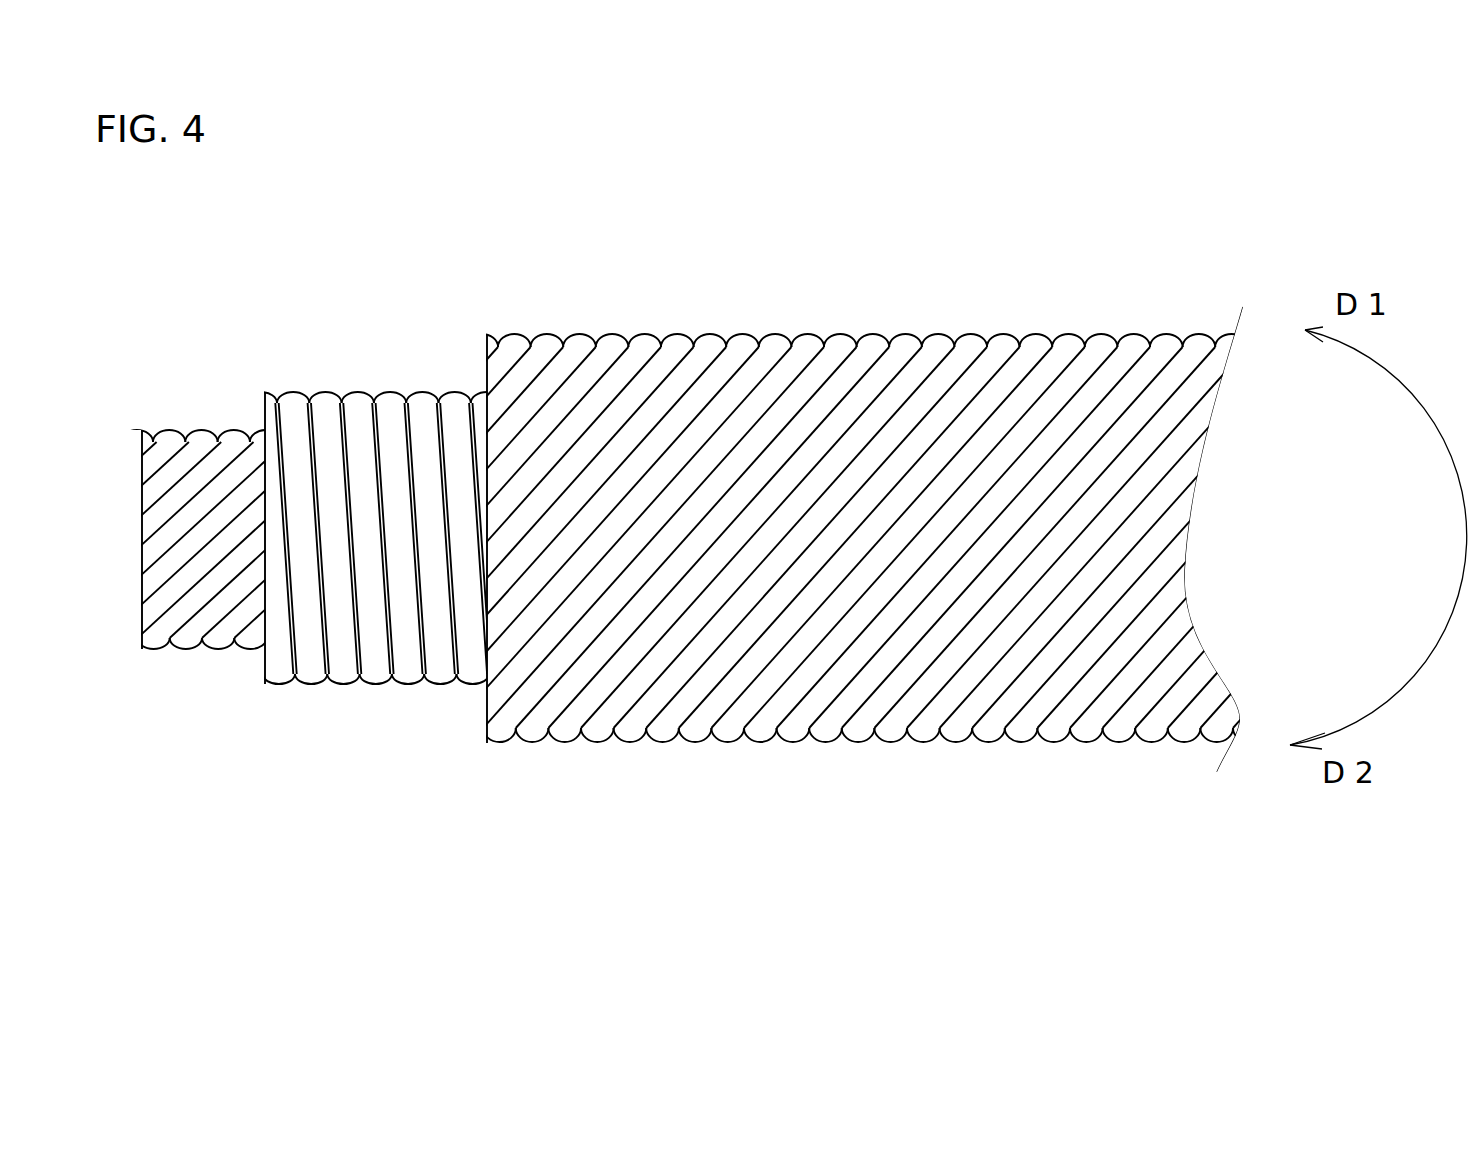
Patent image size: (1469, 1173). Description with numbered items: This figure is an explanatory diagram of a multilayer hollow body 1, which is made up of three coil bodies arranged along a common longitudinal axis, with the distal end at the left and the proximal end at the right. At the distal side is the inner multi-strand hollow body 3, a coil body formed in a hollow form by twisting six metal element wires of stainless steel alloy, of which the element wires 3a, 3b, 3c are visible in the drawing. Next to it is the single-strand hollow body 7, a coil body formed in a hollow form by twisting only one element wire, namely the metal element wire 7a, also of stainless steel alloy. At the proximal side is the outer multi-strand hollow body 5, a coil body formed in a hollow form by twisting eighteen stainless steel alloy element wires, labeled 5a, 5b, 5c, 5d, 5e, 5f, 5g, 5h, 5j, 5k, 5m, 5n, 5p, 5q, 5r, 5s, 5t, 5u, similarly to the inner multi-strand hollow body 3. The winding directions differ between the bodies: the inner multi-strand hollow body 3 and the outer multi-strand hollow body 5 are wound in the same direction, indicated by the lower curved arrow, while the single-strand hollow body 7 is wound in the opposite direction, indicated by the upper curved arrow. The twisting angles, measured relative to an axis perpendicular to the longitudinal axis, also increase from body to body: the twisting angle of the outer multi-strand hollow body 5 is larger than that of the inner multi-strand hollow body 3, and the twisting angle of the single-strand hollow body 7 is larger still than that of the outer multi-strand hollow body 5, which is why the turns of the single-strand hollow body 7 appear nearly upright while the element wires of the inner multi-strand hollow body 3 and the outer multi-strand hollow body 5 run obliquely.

The multilayer hollow body 1 is at (1048, 763).
The inner multi-strand hollow body 3 is at (172, 665).
The metal element wire 3a is at (167, 440).
The metal element wire 3b is at (203, 440).
The metal element wire 3c is at (233, 440).
The outer multi-strand hollow body 5 is at (847, 758).
The metal element wire 5a is at (611, 345).
The metal element wire 5b is at (644, 344).
The metal element wire 5c is at (676, 344).
The metal element wire 5d is at (709, 344).
The metal element wire 5e is at (742, 344).
The metal element wire 5f is at (774, 344).
The metal element wire 5g is at (807, 344).
The metal element wire 5h is at (839, 344).
The metal element wire 5j is at (872, 344).
The metal element wire 5k is at (905, 344).
The metal element wire 5m is at (937, 344).
The metal element wire 5n is at (970, 344).
The metal element wire 5p is at (1002, 344).
The metal element wire 5q is at (1035, 344).
The metal element wire 5r is at (1068, 344).
The metal element wire 5s is at (1100, 344).
The metal element wire 5t is at (1133, 344).
The metal element wire 5u is at (1165, 344).
The single-strand hollow body 7 is at (357, 700).
The metal element wire 7a is at (333, 415).